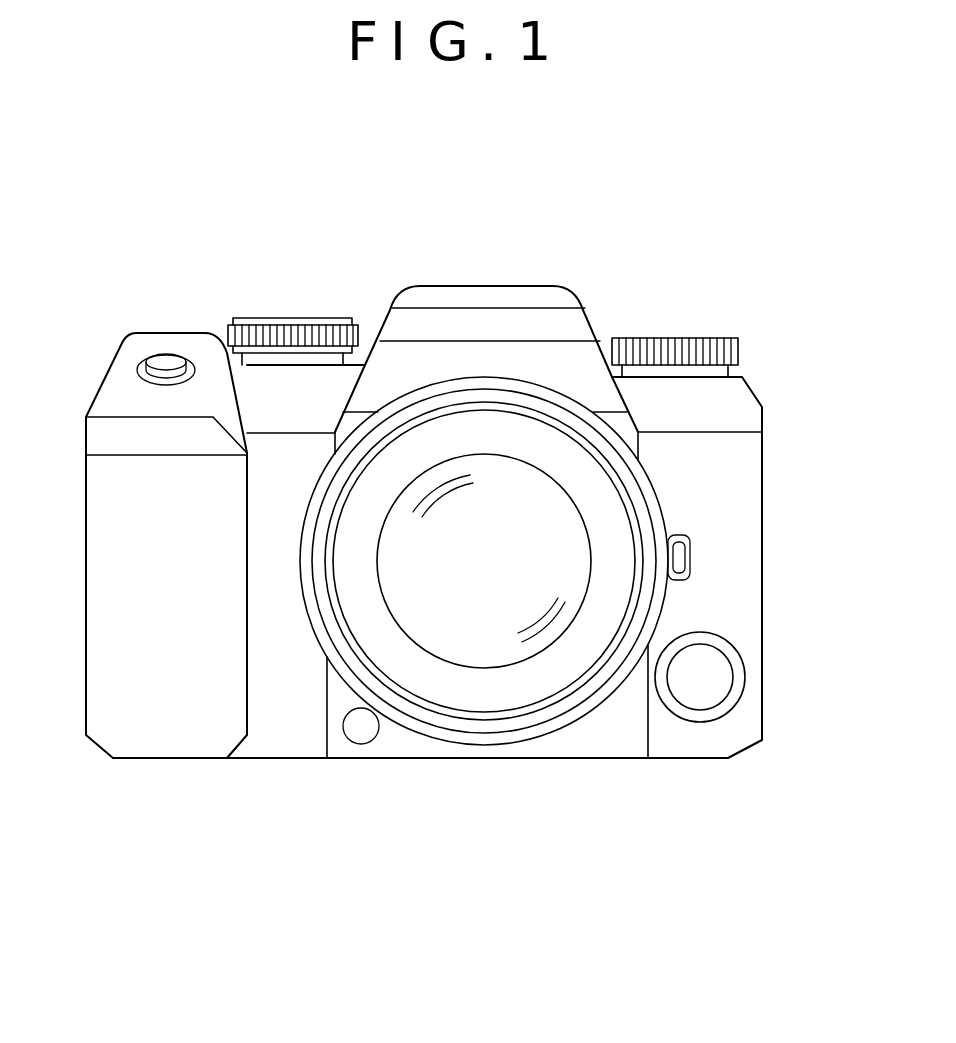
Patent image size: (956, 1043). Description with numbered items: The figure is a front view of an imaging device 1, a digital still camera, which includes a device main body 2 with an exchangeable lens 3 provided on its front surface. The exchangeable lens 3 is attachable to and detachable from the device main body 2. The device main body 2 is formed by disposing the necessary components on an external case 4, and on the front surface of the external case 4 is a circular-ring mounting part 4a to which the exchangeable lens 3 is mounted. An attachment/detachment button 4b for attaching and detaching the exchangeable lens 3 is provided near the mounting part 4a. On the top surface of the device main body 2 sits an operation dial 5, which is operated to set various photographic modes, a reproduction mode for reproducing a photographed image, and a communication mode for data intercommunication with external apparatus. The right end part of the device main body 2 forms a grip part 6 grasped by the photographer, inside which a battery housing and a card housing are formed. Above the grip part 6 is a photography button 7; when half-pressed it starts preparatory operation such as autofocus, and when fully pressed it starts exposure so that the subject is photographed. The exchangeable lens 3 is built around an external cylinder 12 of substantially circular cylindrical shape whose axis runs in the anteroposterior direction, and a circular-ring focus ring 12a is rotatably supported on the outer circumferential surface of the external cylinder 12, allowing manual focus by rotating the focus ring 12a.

The imaging device 1 is at (692, 252).
The device main body 2 is at (748, 457).
The exchangeable lens 3 is at (518, 695).
The external case 4 is at (747, 587).
The mounting part 4a is at (660, 610).
The attachment/detachment button 4b is at (688, 562).
The operation dial 5 is at (262, 346).
The grip part 6 is at (137, 570).
The photography button 7 is at (168, 358).
The external cylinder 12 is at (552, 697).
The focus ring 12a is at (580, 695).